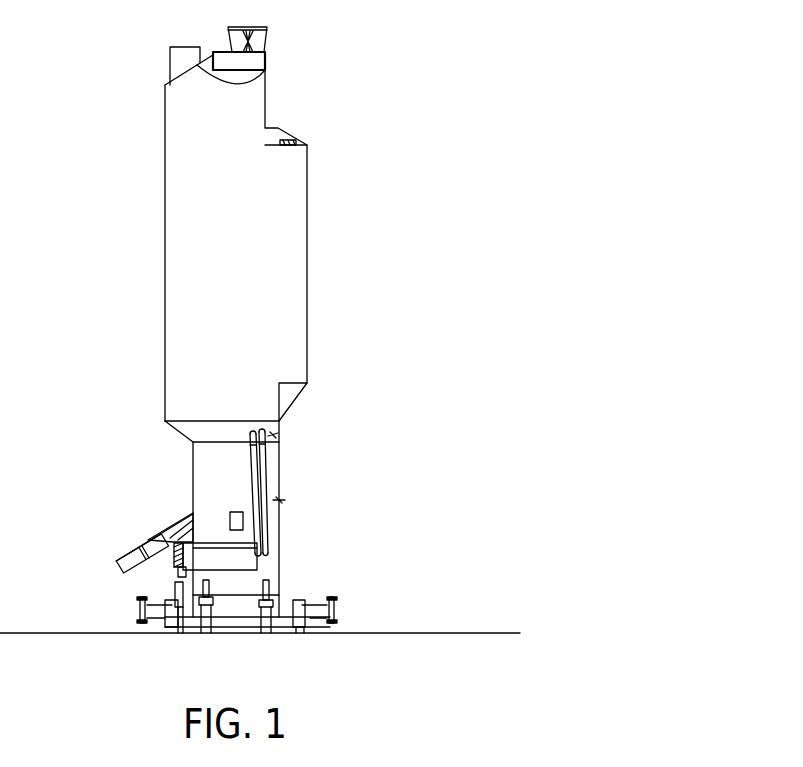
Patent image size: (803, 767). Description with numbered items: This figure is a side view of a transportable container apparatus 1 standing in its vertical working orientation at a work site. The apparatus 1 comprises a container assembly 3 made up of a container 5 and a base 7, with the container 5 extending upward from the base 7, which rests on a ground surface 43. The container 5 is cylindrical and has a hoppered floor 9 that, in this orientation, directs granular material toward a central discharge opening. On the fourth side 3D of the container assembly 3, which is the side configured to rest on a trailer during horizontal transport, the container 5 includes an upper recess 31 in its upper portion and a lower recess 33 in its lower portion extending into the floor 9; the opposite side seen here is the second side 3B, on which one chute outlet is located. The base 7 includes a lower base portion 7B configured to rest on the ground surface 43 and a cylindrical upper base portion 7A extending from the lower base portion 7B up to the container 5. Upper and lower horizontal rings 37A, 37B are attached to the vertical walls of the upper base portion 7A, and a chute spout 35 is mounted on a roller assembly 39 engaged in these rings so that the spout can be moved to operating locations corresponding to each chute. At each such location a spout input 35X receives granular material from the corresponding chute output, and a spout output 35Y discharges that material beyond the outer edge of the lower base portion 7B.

The transportable container apparatus 1 is at (386, 65).
The container assembly 3 is at (130, 306).
The second side of container assembly 3B is at (165, 258).
The fourth side of container assembly 3D is at (307, 263).
The container 5 is at (165, 203).
The upper recess 31 is at (276, 105).
The lower recess 33 is at (297, 406).
The hoppered floor 9 is at (185, 437).
The base 7 is at (193, 485).
The upper base portion 7A is at (279, 520).
The lower base portion 7B is at (302, 634).
The upper horizontal ring 37A is at (245, 548).
The lower horizontal ring 37B is at (230, 572).
The chute spout 35 is at (138, 546).
The spout input 35X is at (170, 530).
The spout output 35Y is at (118, 568).
The roller assembly 39 is at (177, 568).
The ground surface 43 is at (430, 633).